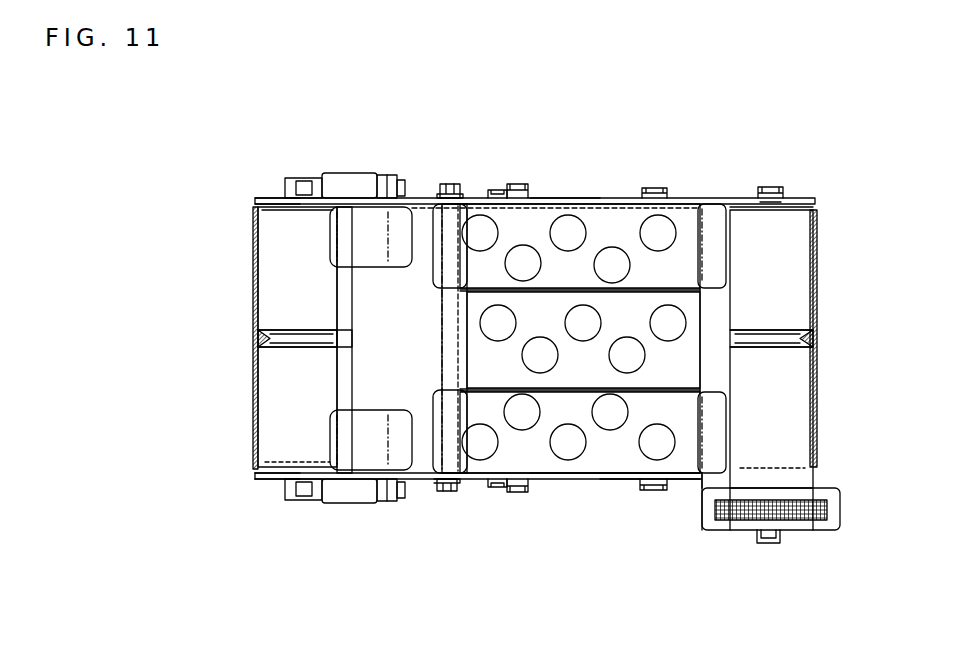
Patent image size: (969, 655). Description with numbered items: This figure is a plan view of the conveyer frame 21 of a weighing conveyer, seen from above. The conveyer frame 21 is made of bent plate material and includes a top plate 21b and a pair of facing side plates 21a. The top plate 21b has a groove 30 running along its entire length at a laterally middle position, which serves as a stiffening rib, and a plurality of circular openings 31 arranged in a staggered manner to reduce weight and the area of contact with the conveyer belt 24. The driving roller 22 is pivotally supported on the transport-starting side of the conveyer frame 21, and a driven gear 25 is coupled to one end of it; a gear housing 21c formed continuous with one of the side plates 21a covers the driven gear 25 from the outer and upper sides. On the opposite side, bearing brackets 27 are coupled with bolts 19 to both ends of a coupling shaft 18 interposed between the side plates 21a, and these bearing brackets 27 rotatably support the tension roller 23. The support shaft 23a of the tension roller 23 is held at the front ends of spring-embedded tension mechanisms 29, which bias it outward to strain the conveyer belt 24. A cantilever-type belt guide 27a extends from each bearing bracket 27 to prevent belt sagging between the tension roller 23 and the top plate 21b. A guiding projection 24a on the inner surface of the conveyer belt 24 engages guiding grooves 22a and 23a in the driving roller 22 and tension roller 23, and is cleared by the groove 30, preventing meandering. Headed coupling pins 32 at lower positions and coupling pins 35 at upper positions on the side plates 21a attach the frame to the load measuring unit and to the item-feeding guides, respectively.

The coupling shaft 18 is at (440, 359).
The bolts 19 is at (443, 184).
The conveyer frame 21 is at (600, 196).
The side plates 21a is at (563, 199).
The top plate 21b is at (608, 450).
The gear housing 21c is at (722, 531).
The driving roller 22 is at (730, 372).
The guiding groove 22a is at (760, 343).
The tension roller 23 is at (347, 363).
The support shaft 23a is at (294, 178).
The conveyer belt 24 is at (817, 283).
The guiding projection 24a is at (265, 346).
The driven gear 25 is at (833, 512).
The bearing brackets 27 is at (275, 197).
The belt guide 27a is at (370, 264).
The tension mechanisms 29 is at (362, 176).
The groove 30 is at (480, 358).
The circular openings 31 is at (562, 243).
The coupling pins 32 is at (498, 189).
The coupling pins 35 is at (518, 184).